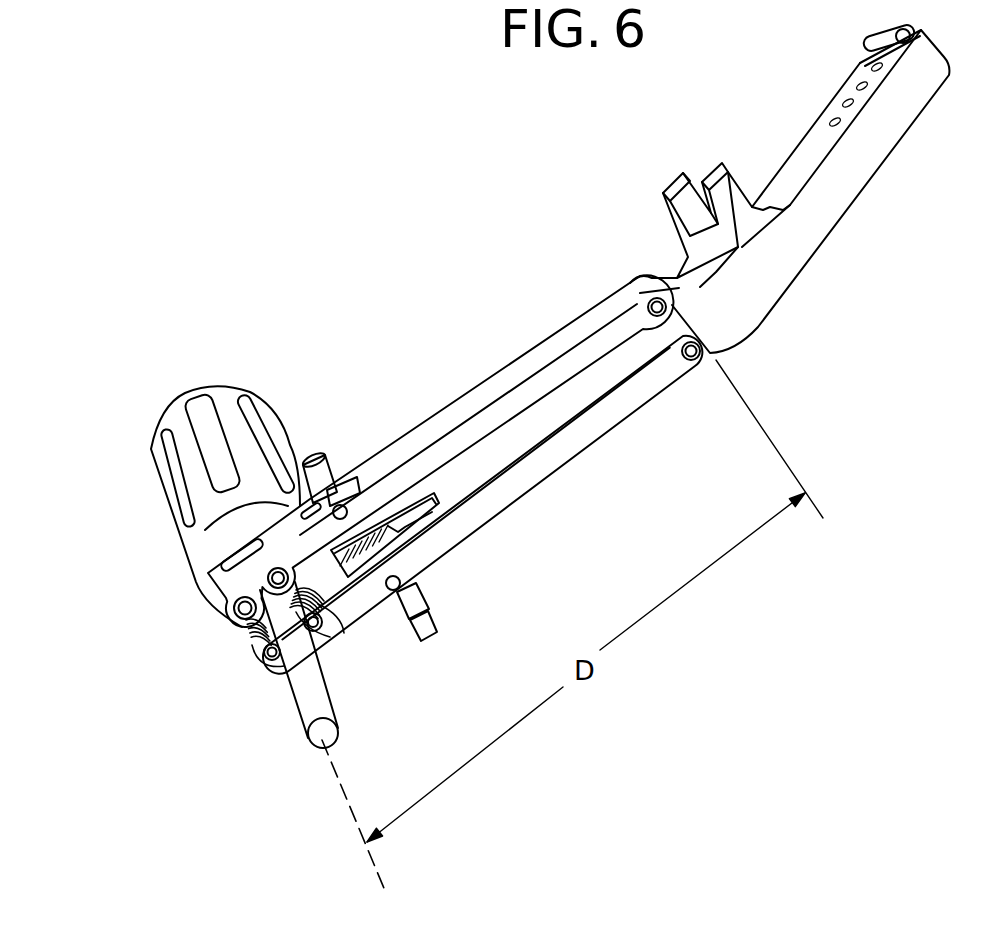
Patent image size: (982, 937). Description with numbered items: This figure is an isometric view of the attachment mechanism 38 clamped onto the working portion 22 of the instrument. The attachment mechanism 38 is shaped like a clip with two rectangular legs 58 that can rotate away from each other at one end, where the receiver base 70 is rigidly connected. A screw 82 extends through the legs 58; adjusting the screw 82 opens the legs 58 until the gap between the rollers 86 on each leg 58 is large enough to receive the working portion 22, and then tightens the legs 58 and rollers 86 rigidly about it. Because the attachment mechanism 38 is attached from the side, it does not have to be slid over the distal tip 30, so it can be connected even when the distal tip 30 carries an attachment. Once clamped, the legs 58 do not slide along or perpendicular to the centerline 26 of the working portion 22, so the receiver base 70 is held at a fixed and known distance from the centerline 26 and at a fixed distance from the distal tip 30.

The attachment mechanism 38 is at (452, 405).
The screw 82 is at (322, 478).
The receiver base 70 is at (815, 213).
The legs 58 is at (538, 468).
The rollers 86 is at (244, 658).
The working portion 22 is at (320, 702).
The distal tip 30 is at (319, 745).
The centerline 26 is at (377, 863).